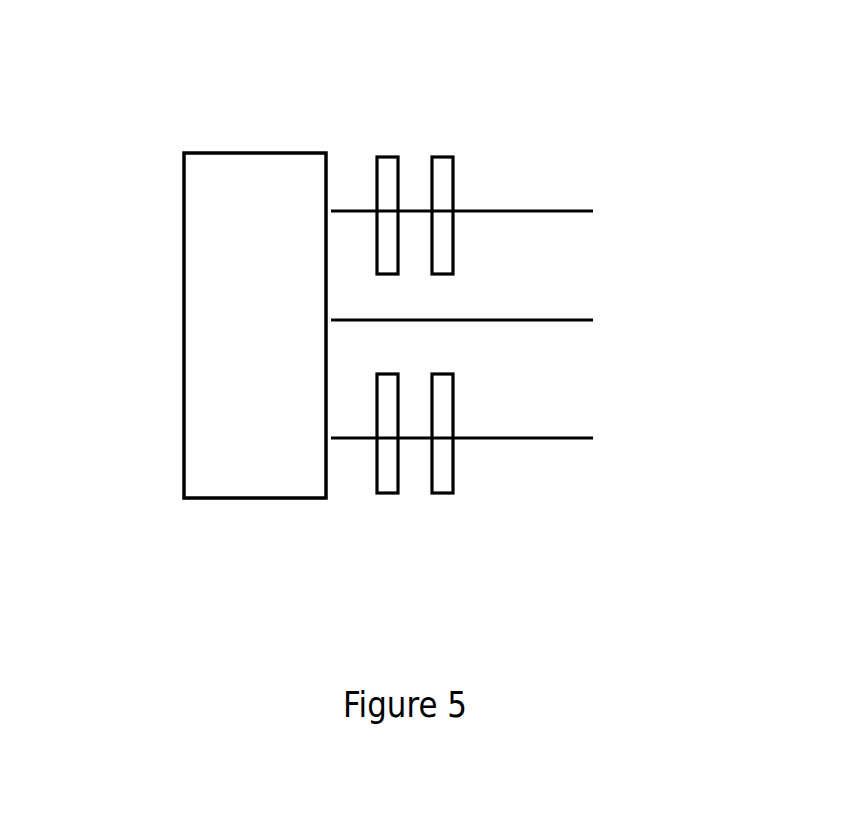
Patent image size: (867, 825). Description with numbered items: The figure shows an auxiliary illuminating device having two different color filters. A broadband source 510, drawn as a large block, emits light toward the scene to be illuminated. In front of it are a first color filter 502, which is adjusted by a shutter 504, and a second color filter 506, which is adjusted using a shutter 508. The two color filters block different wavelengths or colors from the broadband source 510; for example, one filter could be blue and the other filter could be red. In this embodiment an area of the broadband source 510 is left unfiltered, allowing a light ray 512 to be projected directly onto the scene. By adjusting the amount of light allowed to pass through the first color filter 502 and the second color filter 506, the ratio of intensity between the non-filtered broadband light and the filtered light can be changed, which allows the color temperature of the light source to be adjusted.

The first color filter 502 is at (455, 166).
The shutter 504 is at (375, 166).
The second color filter 506 is at (457, 463).
The shutter 508 is at (402, 480).
The broadband source 510 is at (240, 499).
The light ray 512 is at (573, 318).